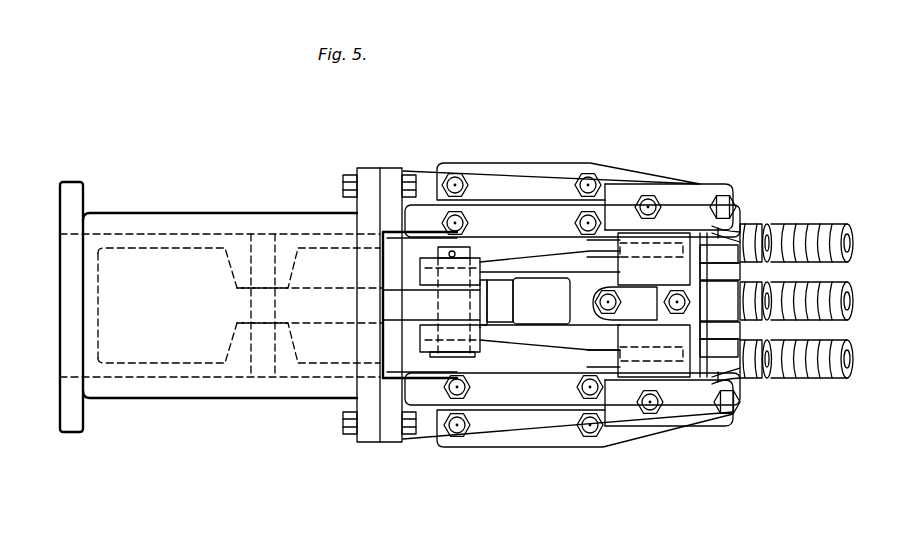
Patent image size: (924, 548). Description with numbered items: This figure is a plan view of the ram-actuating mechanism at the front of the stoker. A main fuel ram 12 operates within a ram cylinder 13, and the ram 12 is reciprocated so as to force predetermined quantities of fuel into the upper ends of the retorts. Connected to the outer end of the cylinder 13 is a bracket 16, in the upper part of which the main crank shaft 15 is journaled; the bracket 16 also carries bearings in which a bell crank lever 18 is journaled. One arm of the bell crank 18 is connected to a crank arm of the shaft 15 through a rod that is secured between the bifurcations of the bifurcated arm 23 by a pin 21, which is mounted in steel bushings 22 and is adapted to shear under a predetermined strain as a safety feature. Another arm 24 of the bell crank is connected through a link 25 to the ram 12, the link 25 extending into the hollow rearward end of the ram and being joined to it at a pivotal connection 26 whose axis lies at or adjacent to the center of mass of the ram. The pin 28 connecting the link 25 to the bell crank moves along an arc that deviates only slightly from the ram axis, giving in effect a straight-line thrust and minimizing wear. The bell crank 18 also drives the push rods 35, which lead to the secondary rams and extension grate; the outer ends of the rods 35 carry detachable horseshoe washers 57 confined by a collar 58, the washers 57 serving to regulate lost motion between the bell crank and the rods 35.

The main fuel ram 12 is at (190, 368).
The ram cylinder 13 is at (213, 228).
The main crank shaft 15 is at (642, 184).
The bracket 16 is at (510, 188).
The bell crank lever 18 is at (556, 334).
The pin 21 is at (703, 258).
The steel bushings 22 is at (706, 270).
The bifurcated arm 23 is at (727, 270).
The arm 24 is at (498, 296).
The link 25 is at (345, 278).
The pivotal connection 26 is at (251, 305).
The pin 28 is at (437, 251).
The push rods 35 is at (778, 230).
The horseshoe washers 57 is at (742, 228).
The collar 58 is at (836, 232).